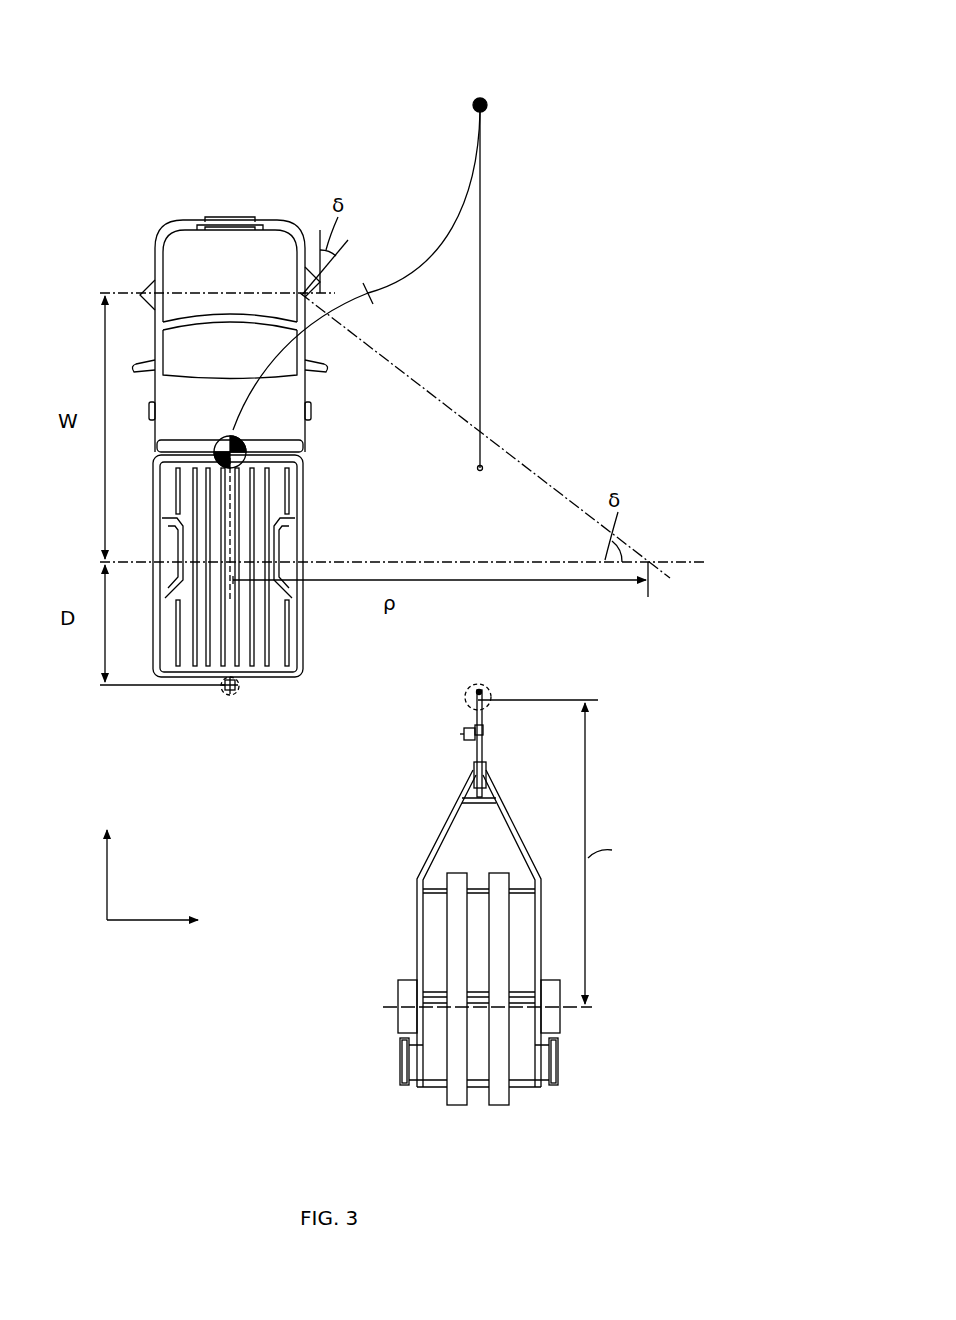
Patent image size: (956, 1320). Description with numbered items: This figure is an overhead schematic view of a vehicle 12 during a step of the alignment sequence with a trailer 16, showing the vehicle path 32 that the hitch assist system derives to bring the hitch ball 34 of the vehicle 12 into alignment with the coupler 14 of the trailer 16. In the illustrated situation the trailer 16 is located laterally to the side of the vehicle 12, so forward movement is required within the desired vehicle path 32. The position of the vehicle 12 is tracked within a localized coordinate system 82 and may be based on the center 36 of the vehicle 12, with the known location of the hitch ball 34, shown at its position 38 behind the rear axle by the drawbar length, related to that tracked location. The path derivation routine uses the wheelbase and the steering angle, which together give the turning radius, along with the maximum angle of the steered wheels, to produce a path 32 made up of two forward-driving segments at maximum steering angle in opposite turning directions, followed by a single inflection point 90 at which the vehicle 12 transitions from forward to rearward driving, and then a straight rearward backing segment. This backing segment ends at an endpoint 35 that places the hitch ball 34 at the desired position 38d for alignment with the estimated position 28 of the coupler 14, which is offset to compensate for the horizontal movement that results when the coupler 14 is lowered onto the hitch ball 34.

The vehicle path 32 is at (560, 56).
The vehicle 12 is at (130, 220).
The center of vehicle 36 is at (213, 466).
The hitch ball 34 is at (222, 688).
The hitch ball position 38 is at (238, 698).
The inflection point 90 is at (476, 98).
The endpoint 35 is at (476, 470).
The trailer 16 is at (413, 925).
The coupler 14 is at (488, 702).
The coupler position 28 is at (490, 688).
The desired hitch ball position 38d is at (478, 690).
The coordinate system 82 is at (153, 948).